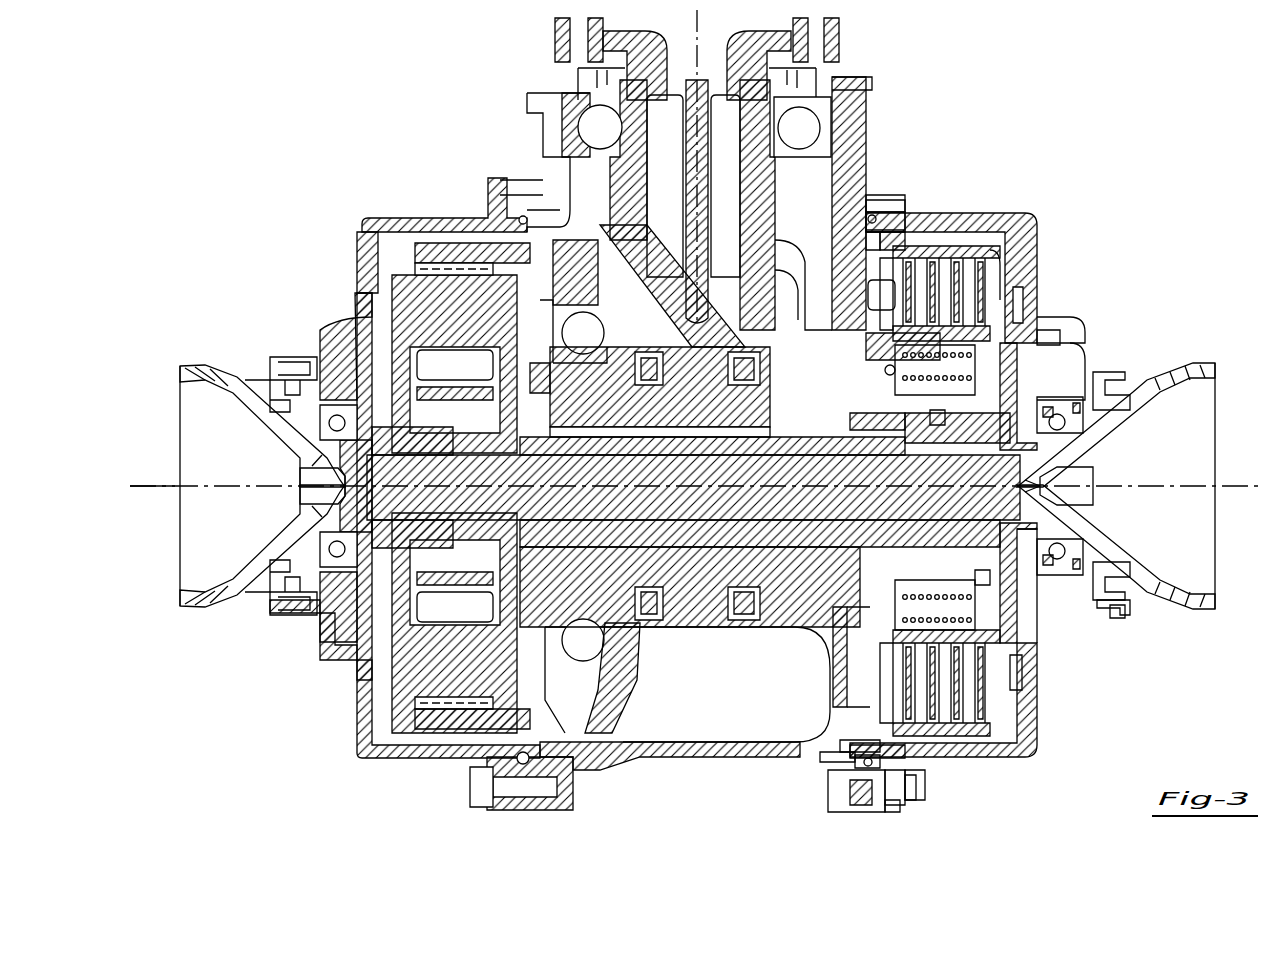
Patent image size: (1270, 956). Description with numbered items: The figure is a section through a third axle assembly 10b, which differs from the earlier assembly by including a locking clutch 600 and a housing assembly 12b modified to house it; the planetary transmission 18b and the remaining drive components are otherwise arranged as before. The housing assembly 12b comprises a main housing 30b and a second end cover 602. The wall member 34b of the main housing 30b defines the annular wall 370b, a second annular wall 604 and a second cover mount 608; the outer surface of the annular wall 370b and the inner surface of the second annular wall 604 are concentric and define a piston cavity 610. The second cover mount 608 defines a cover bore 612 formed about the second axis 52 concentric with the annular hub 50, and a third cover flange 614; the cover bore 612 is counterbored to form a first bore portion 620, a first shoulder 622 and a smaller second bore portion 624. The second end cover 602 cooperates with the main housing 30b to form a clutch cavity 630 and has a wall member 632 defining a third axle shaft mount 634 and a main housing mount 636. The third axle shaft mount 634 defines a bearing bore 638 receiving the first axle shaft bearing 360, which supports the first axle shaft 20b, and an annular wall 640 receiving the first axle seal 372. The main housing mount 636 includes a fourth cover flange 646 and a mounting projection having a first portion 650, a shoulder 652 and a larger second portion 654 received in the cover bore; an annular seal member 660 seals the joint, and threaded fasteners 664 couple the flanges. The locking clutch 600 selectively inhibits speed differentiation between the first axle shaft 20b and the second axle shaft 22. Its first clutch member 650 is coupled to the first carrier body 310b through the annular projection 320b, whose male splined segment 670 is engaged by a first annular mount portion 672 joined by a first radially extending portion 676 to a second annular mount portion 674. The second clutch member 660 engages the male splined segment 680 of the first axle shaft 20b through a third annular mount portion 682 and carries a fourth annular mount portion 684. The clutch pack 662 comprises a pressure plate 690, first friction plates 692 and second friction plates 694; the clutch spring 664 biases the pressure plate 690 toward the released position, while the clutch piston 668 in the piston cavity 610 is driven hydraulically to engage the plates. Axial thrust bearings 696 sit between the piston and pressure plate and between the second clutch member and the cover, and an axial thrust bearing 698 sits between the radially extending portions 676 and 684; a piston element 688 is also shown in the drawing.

The axle assembly 10b is at (222, 143).
The housing assembly 12b is at (485, 222).
The planetary transmission 18b is at (400, 275).
The main housing 30b is at (552, 142).
The second axle shaft 22 is at (182, 366).
The second axis 52 is at (160, 487).
The first axle shaft 20b is at (1215, 363).
The wall member 34b is at (697, 760).
The annular hub 50 is at (573, 415).
The first carrier body 310b is at (500, 418).
The annular projection 320b is at (653, 442).
The annular wall 370b is at (856, 378).
The first axle shaft bearing 360 is at (1064, 552).
The first axle seal 372 is at (1132, 600).
The locking clutch 600 is at (1045, 237).
The second end cover 602 is at (1012, 222).
The second annular wall 604 is at (884, 243).
The second cover mount 608 is at (872, 198).
The piston cavity 610 is at (840, 297).
The cover bore 612 is at (874, 746).
The third cover flange 614 is at (820, 806).
The first bore portion 620 is at (880, 770).
The first shoulder 622 is at (850, 760).
The second bore portion 624 is at (853, 757).
The clutch cavity 630 is at (1008, 738).
The wall member 632 is at (1070, 338).
The third axle shaft mount 634 is at (1068, 597).
The main housing mount 636 is at (906, 816).
The bearing bore 638 is at (1103, 588).
The annular wall 640 is at (1117, 618).
The fourth cover flange 646 is at (893, 810).
The first clutch member 650 is at (855, 228).
The shoulder 652 is at (912, 190).
The second portion 654 is at (895, 218).
The second clutch member 660 is at (848, 198).
The clutch pack 662 is at (982, 695).
The clutch spring 664 is at (913, 593).
The clutch piston 668 is at (840, 640).
The male splined segment 670 is at (892, 448).
The first annular mount portion 672 is at (960, 375).
The second annular mount portion 674 is at (1048, 340).
The first radially extending portion 676 is at (978, 563).
The male splined segment 680 is at (940, 450).
The third annular mount portion 682 is at (893, 540).
The fourth annular mount portion 684 is at (988, 730).
The piston 688 is at (985, 578).
The pressure plate 690 is at (887, 350).
The first friction plates 692 is at (988, 262).
The second friction plates 694 is at (982, 327).
The axial thrust bearings 696 is at (887, 307).
The axial thrust bearing 698 is at (1002, 417).